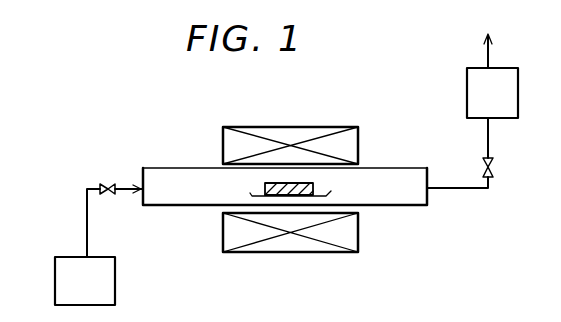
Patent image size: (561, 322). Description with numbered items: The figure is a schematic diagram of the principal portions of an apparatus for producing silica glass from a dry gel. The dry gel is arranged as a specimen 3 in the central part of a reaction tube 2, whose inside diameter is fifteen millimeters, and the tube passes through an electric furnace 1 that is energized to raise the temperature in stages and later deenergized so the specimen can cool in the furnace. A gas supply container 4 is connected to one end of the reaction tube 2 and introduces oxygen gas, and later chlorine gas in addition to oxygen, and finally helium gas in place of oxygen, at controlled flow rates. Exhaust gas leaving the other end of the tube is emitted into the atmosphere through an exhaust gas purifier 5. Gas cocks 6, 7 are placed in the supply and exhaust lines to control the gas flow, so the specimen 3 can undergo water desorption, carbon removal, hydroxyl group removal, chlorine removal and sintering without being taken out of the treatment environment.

The electric furnace 1 is at (323, 127).
The reaction tube 2 is at (390, 177).
The specimen 3 is at (315, 188).
The gas supply container 4 is at (115, 285).
The exhaust gas purifier 5 is at (518, 92).
The gas cock 6 is at (108, 184).
The gas cock 7 is at (494, 165).